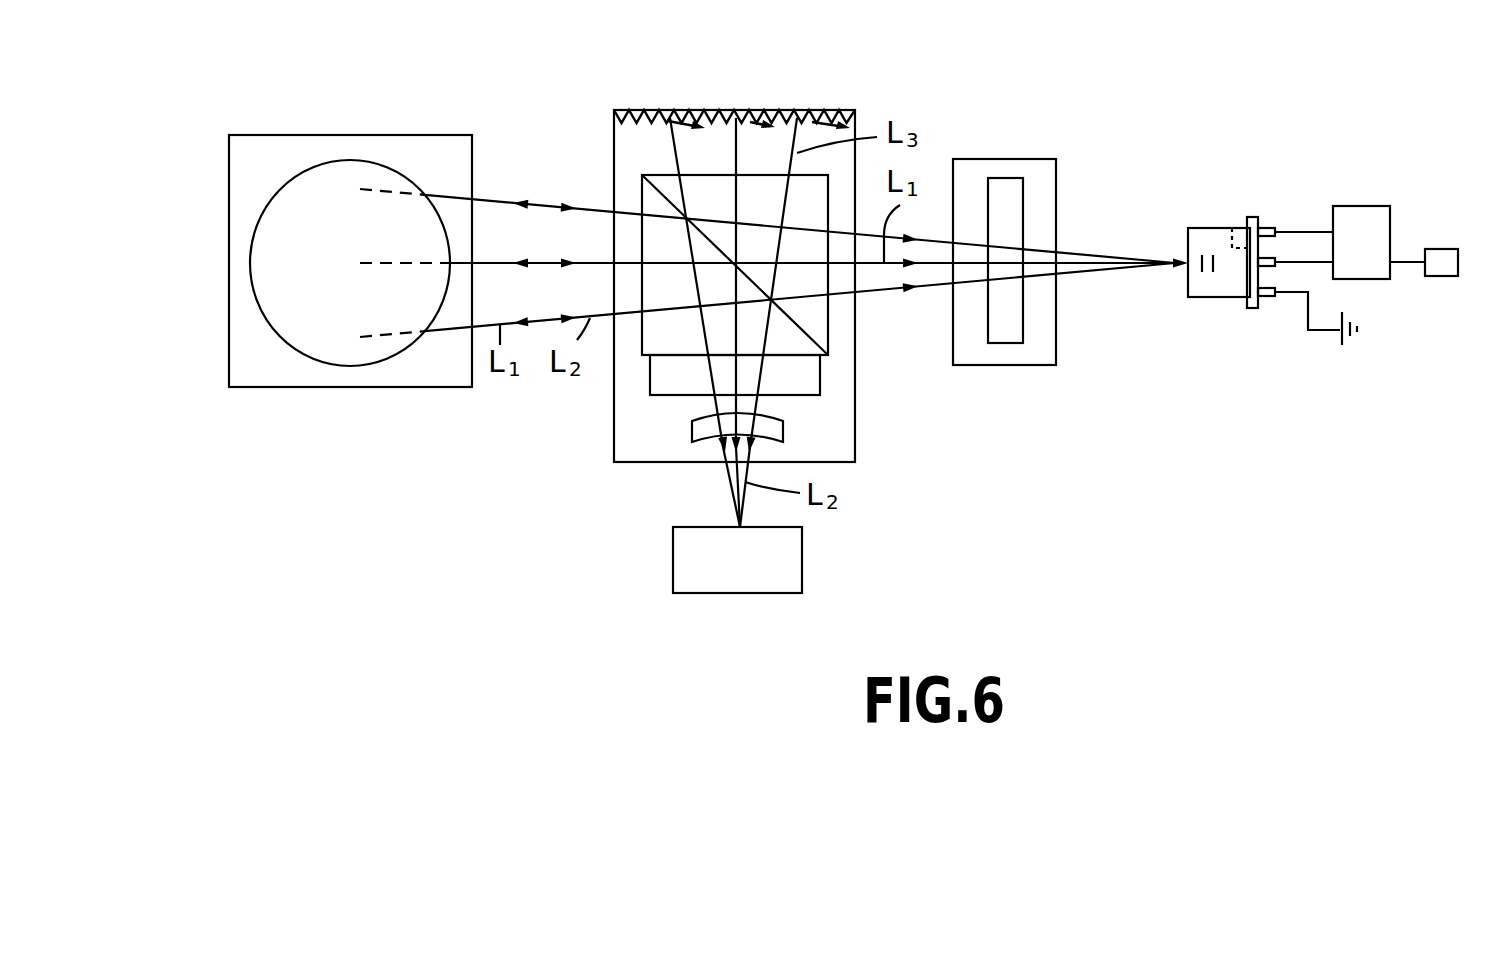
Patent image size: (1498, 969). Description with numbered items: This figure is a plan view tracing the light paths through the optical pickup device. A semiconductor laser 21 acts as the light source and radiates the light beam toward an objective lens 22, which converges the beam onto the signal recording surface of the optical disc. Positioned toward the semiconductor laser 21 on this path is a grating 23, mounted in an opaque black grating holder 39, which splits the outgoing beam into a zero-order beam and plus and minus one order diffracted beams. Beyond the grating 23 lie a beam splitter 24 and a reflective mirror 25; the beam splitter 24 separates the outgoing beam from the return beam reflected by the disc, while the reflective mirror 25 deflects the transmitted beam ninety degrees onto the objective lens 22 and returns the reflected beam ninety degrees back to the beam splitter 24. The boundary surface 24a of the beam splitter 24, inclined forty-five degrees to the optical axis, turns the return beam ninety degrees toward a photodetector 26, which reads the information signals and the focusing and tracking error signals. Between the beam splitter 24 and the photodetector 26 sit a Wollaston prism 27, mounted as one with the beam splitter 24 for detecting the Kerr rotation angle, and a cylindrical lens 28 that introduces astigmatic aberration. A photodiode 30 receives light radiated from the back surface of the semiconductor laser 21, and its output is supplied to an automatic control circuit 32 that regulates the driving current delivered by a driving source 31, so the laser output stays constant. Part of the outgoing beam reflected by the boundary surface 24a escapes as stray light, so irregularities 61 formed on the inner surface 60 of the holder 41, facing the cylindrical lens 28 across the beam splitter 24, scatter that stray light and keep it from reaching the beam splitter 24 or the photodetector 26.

The semiconductor laser 21 is at (1205, 228).
The objective lens 22 is at (260, 256).
The grating 23 is at (1012, 185).
The beam splitter 24 is at (772, 185).
The boundary surface 24a is at (678, 206).
The reflective mirror 25 is at (287, 378).
The photodetector 26 is at (802, 562).
The Wollaston prism 27 is at (808, 376).
The cylindrical lens 28 is at (775, 432).
The photodiode 30 is at (1238, 230).
The driving source 31 is at (1440, 249).
The automatic control circuit 32 is at (1365, 206).
The grating holder 39 is at (1052, 160).
The holder 41 is at (614, 143).
The inner surface 60 is at (622, 108).
The irregularities 61 is at (855, 125).